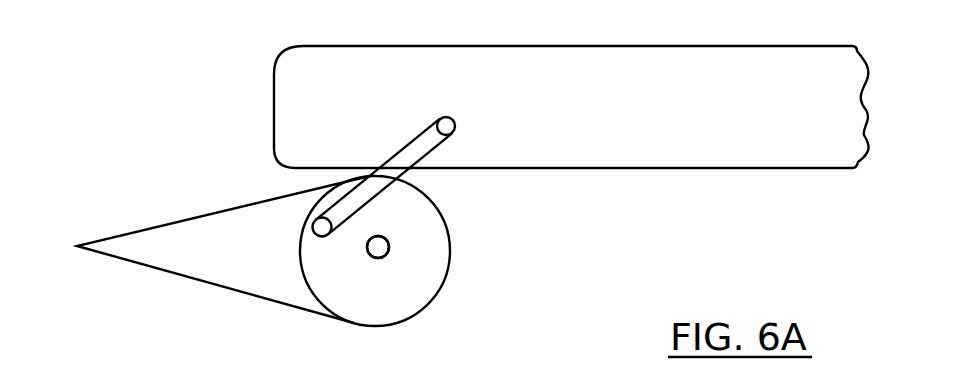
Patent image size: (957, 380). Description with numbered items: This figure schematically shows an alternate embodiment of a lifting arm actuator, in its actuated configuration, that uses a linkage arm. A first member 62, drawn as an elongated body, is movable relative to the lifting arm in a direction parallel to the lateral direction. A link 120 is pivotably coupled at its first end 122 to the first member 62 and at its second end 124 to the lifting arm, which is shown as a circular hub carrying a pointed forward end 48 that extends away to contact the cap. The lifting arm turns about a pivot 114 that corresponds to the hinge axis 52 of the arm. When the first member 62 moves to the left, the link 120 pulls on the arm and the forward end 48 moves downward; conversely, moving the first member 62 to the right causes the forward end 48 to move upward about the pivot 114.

The forward end of the lifting arm 48 is at (75, 242).
The first member 62 is at (511, 102).
The link 120 is at (404, 160).
The first end of the link 122 is at (437, 126).
The second end of the link 124 is at (313, 228).
The pivot 114 is at (389, 245).
The hinge axis 52 is at (378, 247).